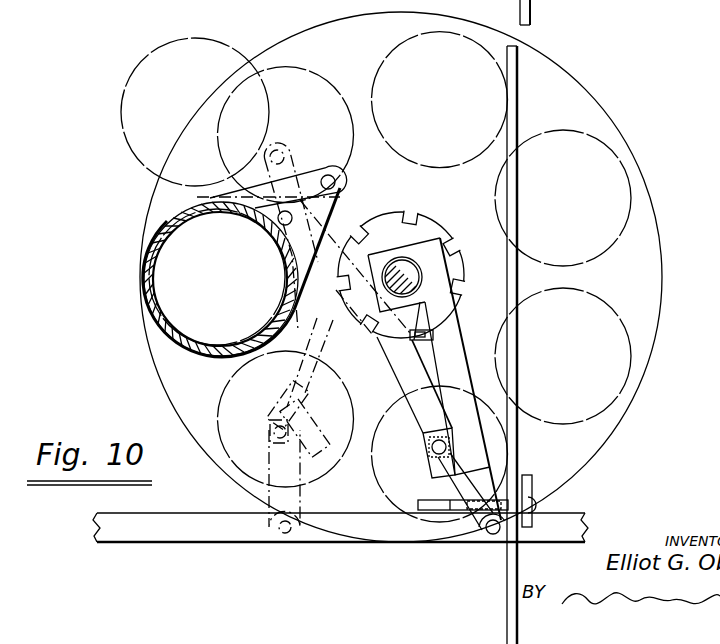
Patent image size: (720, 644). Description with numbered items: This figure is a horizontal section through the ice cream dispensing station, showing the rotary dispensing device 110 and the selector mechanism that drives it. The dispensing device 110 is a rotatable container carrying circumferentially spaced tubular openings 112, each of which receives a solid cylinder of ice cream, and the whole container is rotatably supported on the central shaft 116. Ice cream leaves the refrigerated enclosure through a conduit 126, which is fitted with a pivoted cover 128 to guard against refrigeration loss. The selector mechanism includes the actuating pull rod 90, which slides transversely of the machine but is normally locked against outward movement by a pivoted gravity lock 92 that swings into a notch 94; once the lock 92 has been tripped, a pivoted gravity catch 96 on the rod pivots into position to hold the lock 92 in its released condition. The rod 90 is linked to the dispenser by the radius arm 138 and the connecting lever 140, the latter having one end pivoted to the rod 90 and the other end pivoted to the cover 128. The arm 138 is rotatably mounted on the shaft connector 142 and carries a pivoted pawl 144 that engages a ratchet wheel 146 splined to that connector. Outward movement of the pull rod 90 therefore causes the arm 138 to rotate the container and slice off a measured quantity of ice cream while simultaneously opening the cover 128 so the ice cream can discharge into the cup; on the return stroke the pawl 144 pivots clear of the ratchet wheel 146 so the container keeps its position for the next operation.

The rotary dispensing device 110 is at (613, 115).
The tubular openings 112 is at (622, 200).
The pivoted cover 128 is at (128, 80).
The conduit 126 is at (210, 350).
The ratchet wheel 146 is at (430, 224).
The shaft connector 142 is at (404, 257).
The central shaft 116 is at (422, 273).
The radius arm 138 is at (462, 363).
The pivoted pawl 144 is at (395, 333).
The connecting lever 140 is at (273, 382).
The pivoted gravity catch 96 is at (430, 500).
The pivoted gravity lock 92 is at (536, 500).
The notch 94 is at (522, 530).
The actuating pull rod 90 is at (218, 533).